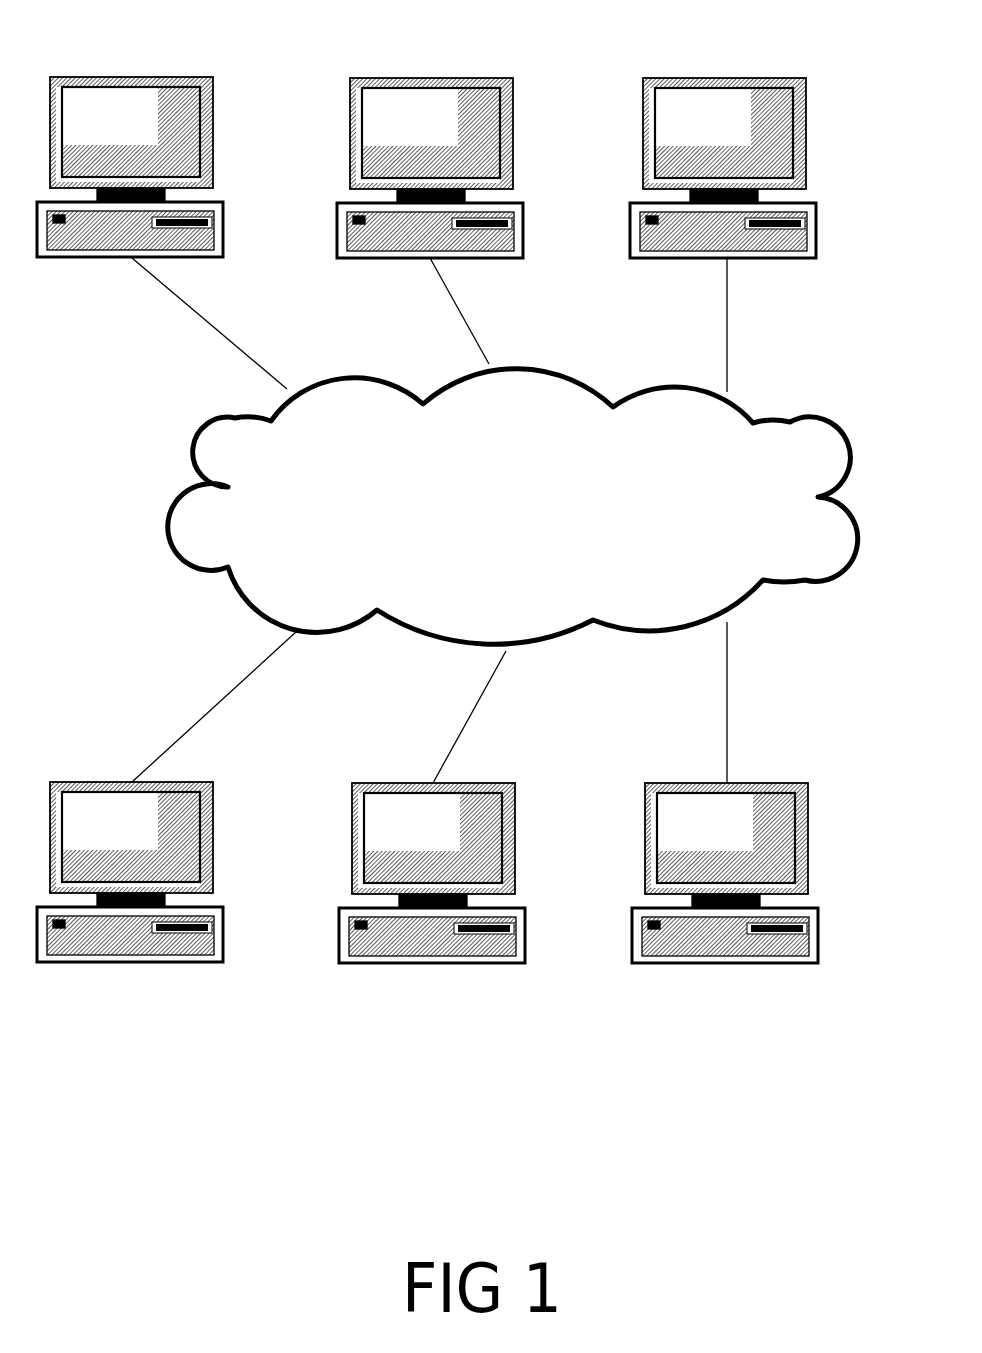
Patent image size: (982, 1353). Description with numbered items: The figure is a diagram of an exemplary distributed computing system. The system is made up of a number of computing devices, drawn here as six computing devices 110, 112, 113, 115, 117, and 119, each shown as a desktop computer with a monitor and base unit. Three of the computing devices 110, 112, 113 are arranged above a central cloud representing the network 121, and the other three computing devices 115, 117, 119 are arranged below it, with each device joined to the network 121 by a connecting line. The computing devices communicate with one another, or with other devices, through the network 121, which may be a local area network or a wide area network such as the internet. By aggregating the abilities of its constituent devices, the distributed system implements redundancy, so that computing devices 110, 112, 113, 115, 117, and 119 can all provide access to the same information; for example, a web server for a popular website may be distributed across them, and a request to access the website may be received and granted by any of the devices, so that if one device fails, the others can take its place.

The computing device 110 is at (217, 115).
The computing device 112 is at (508, 117).
The computing device 113 is at (802, 117).
The computing device 115 is at (217, 820).
The computing device 117 is at (510, 822).
The computing device 119 is at (803, 820).
The network 121 is at (513, 507).